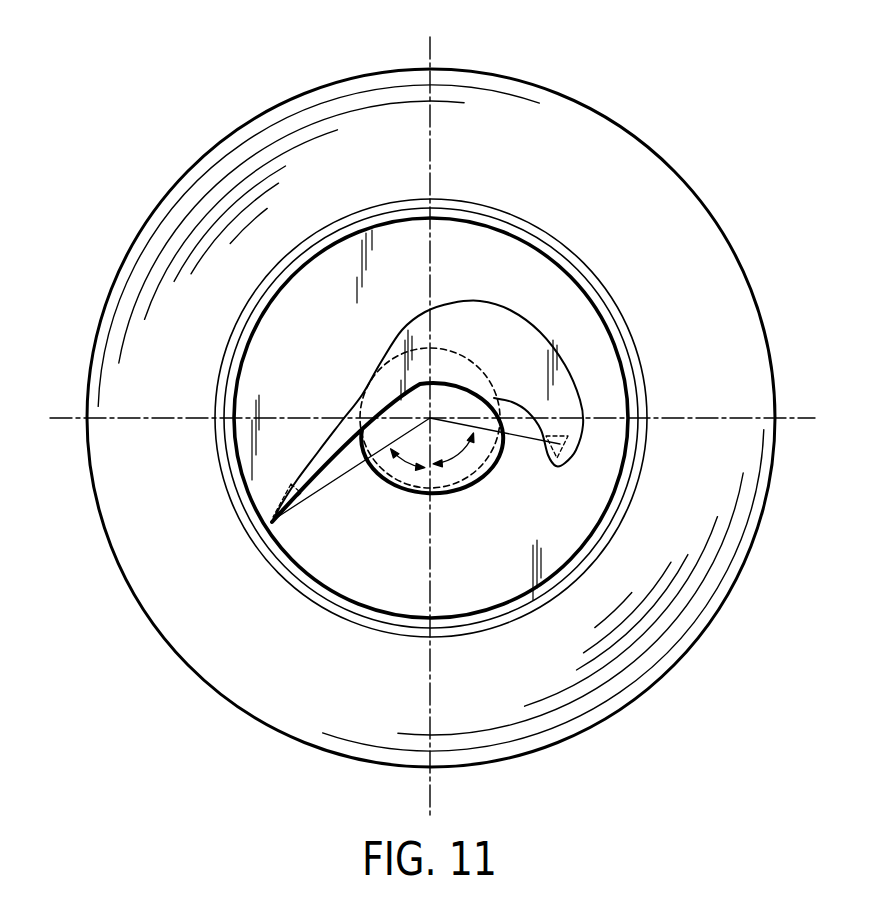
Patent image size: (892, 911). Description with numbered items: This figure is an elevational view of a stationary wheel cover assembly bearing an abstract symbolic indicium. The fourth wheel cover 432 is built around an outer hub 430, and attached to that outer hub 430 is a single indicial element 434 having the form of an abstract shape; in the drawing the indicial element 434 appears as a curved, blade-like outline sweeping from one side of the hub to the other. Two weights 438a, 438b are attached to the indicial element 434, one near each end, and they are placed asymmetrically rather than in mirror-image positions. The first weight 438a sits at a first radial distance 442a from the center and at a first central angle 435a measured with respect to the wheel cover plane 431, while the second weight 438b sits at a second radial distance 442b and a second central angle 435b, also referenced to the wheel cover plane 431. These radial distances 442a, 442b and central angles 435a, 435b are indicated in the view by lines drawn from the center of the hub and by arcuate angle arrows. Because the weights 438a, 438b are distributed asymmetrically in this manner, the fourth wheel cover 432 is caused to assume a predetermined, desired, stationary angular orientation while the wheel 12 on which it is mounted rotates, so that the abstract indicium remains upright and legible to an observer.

The wheel 12 is at (644, 477).
The outer hub 430 is at (376, 374).
The wheel cover plane 431 is at (432, 49).
The fourth wheel cover 432 is at (573, 262).
The indicial element 434 is at (510, 307).
The first central angle 435a is at (402, 466).
The second central angle 435b is at (473, 457).
The first weight 438a is at (292, 508).
The second weight 438b is at (567, 464).
The first radial distance 442a is at (337, 478).
The second radial distance 442b is at (537, 449).